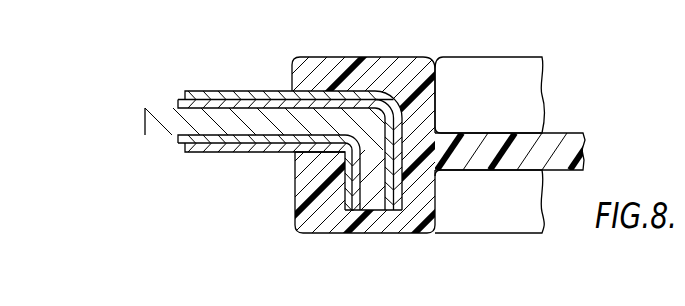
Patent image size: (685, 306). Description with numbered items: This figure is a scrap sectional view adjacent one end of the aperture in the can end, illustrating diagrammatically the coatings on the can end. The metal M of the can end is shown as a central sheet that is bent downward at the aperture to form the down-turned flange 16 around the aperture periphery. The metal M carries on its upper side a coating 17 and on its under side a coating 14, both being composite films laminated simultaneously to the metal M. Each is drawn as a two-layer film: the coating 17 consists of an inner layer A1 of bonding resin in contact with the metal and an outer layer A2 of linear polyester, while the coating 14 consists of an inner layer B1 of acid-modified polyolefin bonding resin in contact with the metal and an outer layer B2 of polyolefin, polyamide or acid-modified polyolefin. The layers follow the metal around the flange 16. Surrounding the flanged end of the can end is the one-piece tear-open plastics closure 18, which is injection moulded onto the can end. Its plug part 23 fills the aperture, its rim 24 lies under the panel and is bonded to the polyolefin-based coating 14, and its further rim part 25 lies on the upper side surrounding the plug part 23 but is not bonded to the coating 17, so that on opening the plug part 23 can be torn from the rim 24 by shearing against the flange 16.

The metal M is at (143, 125).
The inner layer A1 is at (179, 103).
The outer layer A2 is at (194, 91).
The inner layer B1 is at (177, 143).
The outer layer B2 is at (207, 146).
The coating 14 is at (248, 172).
The down-turned flange 16 is at (373, 185).
The coating 17 is at (271, 125).
The tear-open plastics closure 18 is at (460, 53).
The plug part 23 is at (470, 150).
The rim 24 is at (338, 222).
The rim part 25 is at (380, 62).